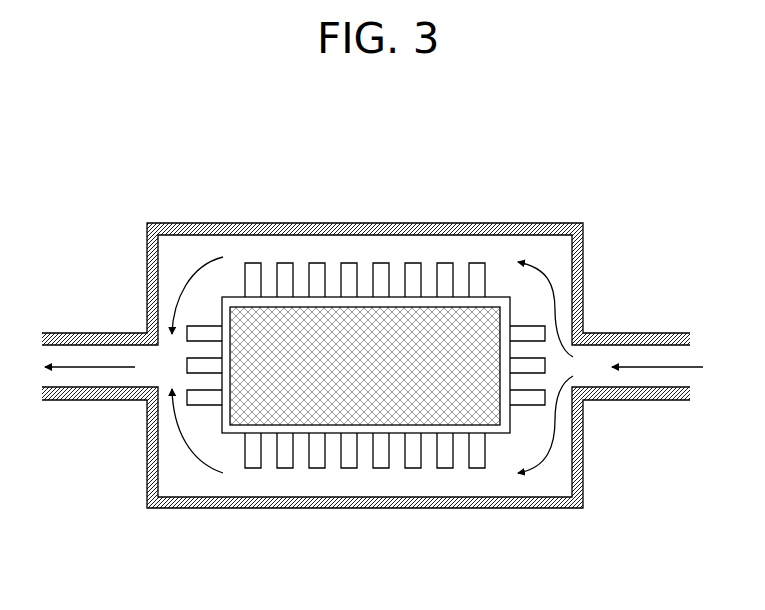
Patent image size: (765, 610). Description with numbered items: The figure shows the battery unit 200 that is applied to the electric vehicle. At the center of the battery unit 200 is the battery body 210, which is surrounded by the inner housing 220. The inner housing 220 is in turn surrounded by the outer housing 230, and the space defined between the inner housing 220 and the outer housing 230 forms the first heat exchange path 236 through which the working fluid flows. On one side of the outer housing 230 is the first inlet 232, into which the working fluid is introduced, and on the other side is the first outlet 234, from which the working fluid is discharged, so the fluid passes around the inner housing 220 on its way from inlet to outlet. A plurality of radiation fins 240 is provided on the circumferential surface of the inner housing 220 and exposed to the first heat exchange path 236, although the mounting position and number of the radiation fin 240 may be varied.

The battery unit 200 is at (113, 118).
The battery body 210 is at (277, 415).
The inner housing 220 is at (366, 360).
The outer housing 230 is at (483, 508).
The first inlet 232 is at (640, 400).
The first outlet 234 is at (88, 400).
The first heat exchange path 236 is at (290, 244).
The radiation fin 240 is at (413, 263).